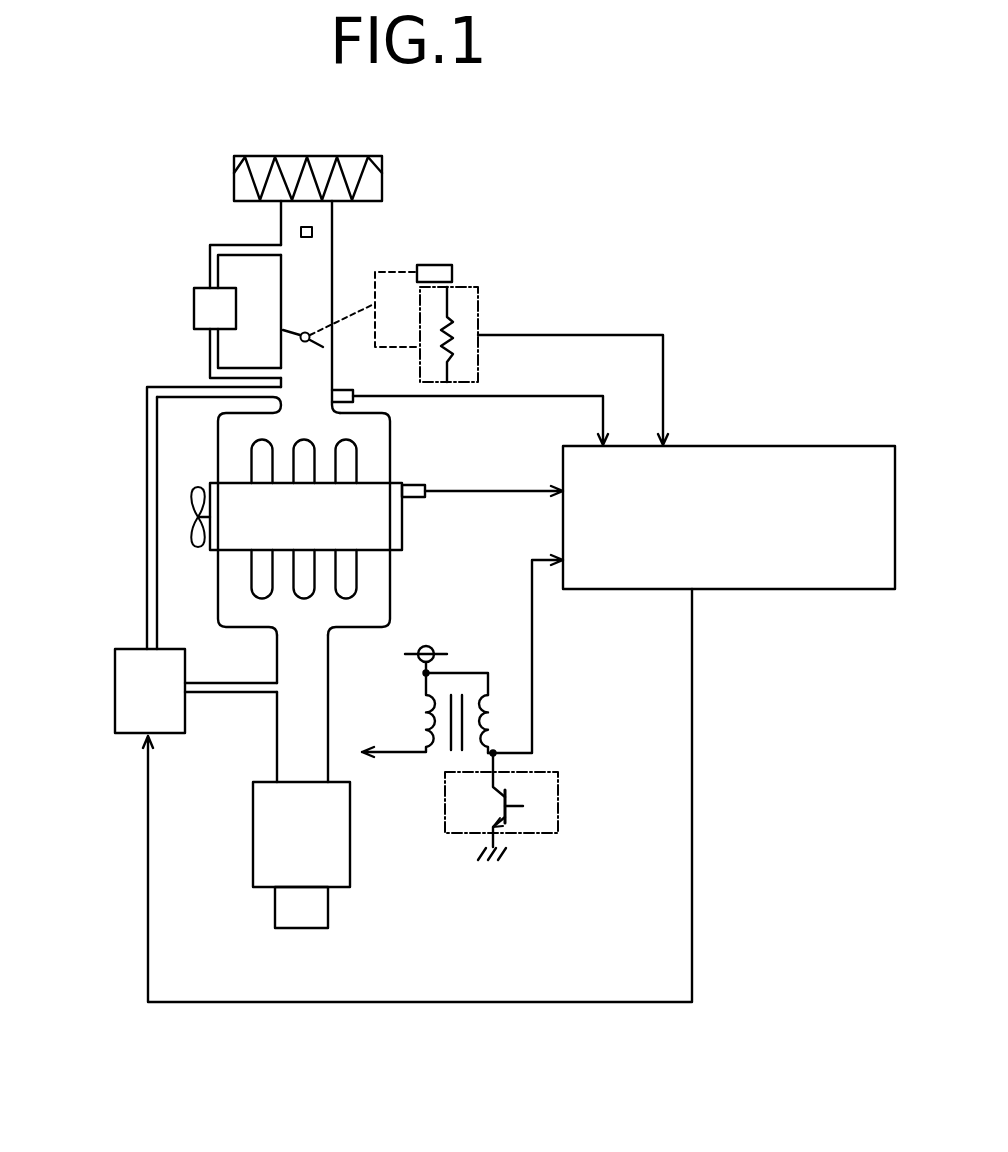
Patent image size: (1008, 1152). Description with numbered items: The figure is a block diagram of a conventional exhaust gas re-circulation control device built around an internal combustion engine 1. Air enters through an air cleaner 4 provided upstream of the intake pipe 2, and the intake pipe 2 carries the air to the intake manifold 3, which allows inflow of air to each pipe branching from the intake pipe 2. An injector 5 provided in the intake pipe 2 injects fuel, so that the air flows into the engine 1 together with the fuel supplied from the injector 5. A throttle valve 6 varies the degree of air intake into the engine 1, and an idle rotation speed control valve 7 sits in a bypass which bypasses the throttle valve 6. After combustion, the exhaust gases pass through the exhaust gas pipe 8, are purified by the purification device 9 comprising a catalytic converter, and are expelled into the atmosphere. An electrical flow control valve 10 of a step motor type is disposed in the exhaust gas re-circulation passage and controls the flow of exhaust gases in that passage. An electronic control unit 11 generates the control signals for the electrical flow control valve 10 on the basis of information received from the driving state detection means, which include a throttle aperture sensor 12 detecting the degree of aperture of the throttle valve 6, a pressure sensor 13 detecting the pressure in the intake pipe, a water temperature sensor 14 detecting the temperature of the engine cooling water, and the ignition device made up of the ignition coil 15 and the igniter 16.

The internal combustion engine 1 is at (400, 535).
The intake pipe 2 is at (325, 253).
The intake manifold 3 is at (375, 440).
The air cleaner 4 is at (382, 182).
The injector 5 is at (300, 232).
The throttle valve 6 is at (285, 333).
The idle rotation speed control valve 7 is at (200, 306).
The exhaust gas pipe 8 is at (288, 737).
The purification device 9 is at (267, 820).
The electrical flow control valve 10 is at (115, 672).
The electronic control unit 11 is at (767, 444).
The throttle aperture sensor 12 is at (478, 290).
The pressure sensor 13 is at (343, 386).
The water temperature sensor 14 is at (425, 479).
The ignition coil 15 is at (427, 707).
The igniter 16 is at (558, 793).